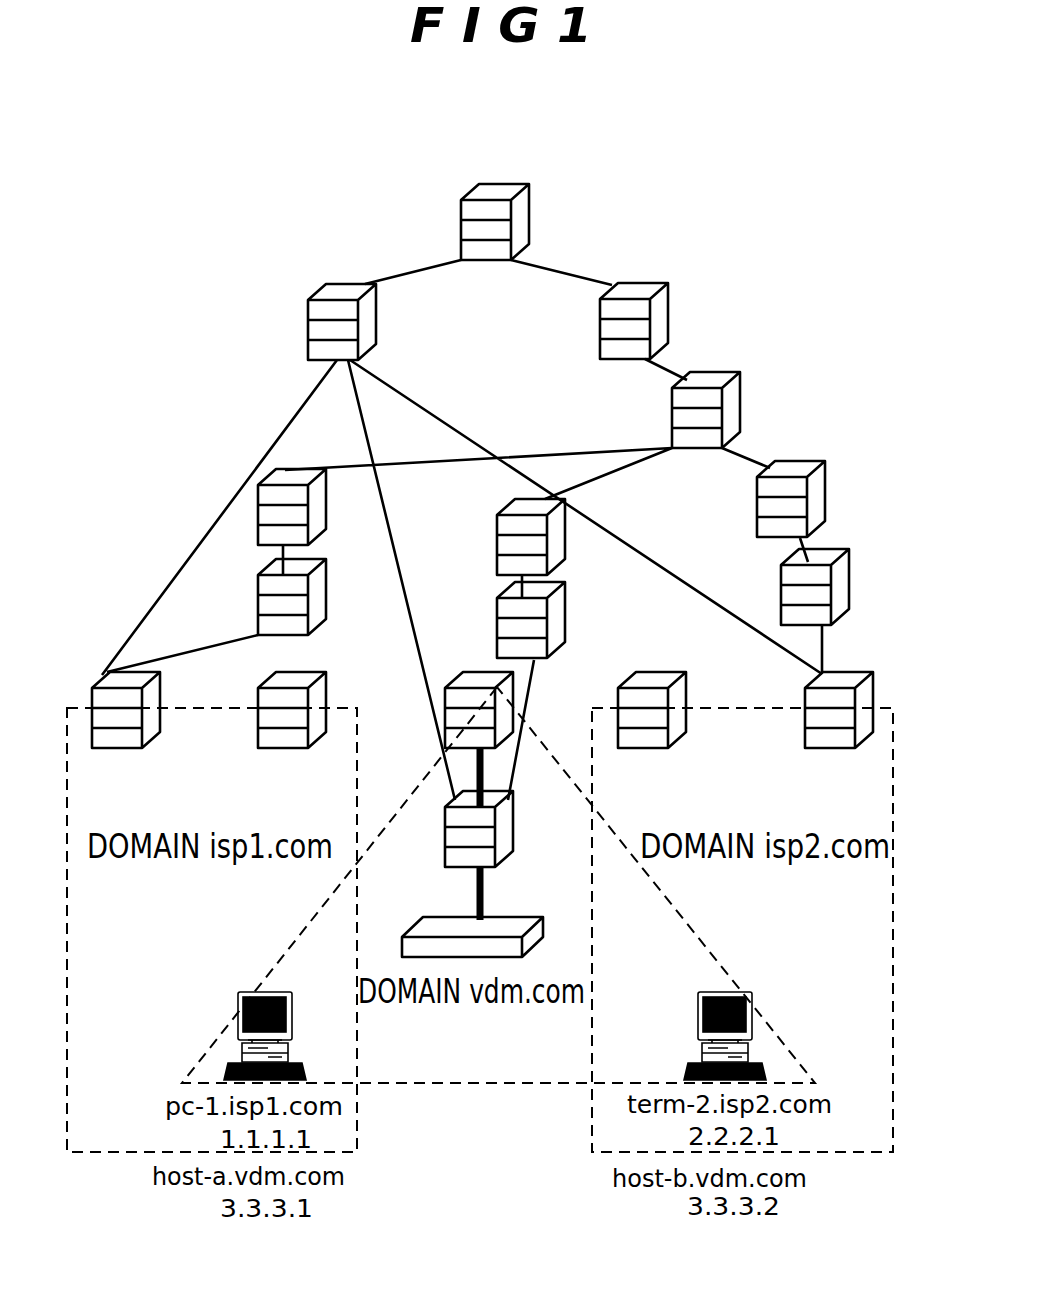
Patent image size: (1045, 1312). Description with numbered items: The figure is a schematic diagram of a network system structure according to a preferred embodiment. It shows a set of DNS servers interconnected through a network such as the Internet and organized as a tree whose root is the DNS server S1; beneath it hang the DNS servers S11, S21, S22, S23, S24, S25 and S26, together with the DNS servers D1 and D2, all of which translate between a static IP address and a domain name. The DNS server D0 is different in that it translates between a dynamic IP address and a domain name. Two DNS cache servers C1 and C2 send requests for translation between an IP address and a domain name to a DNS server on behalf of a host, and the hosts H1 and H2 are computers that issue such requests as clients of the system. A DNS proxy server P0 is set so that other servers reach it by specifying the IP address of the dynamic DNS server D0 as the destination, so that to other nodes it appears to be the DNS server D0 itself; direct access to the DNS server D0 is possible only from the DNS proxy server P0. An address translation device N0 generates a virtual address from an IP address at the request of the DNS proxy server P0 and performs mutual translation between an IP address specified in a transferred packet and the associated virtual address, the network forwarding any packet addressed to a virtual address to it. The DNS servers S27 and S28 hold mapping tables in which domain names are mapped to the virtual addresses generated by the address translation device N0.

The DNS server S1 is at (529, 185).
The DNS server S11 is at (308, 295).
The DNS server S21 is at (668, 289).
The DNS server S22 is at (740, 392).
The DNS server S23 is at (308, 540).
The DNS server S24 is at (825, 477).
The DNS server S25 is at (326, 602).
The DNS server S26 is at (849, 565).
The DNS server S27 is at (565, 525).
The DNS server S28 is at (565, 608).
The DNS server D0 is at (513, 700).
The DNS server D1 is at (101, 675).
The DNS server D2 is at (873, 697).
The DNS cache server C1 is at (326, 694).
The DNS cache server C2 is at (686, 697).
The DNS proxy server P0 is at (513, 838).
The address translation device N0 is at (497, 918).
The host H1 is at (238, 992).
The host H2 is at (753, 992).